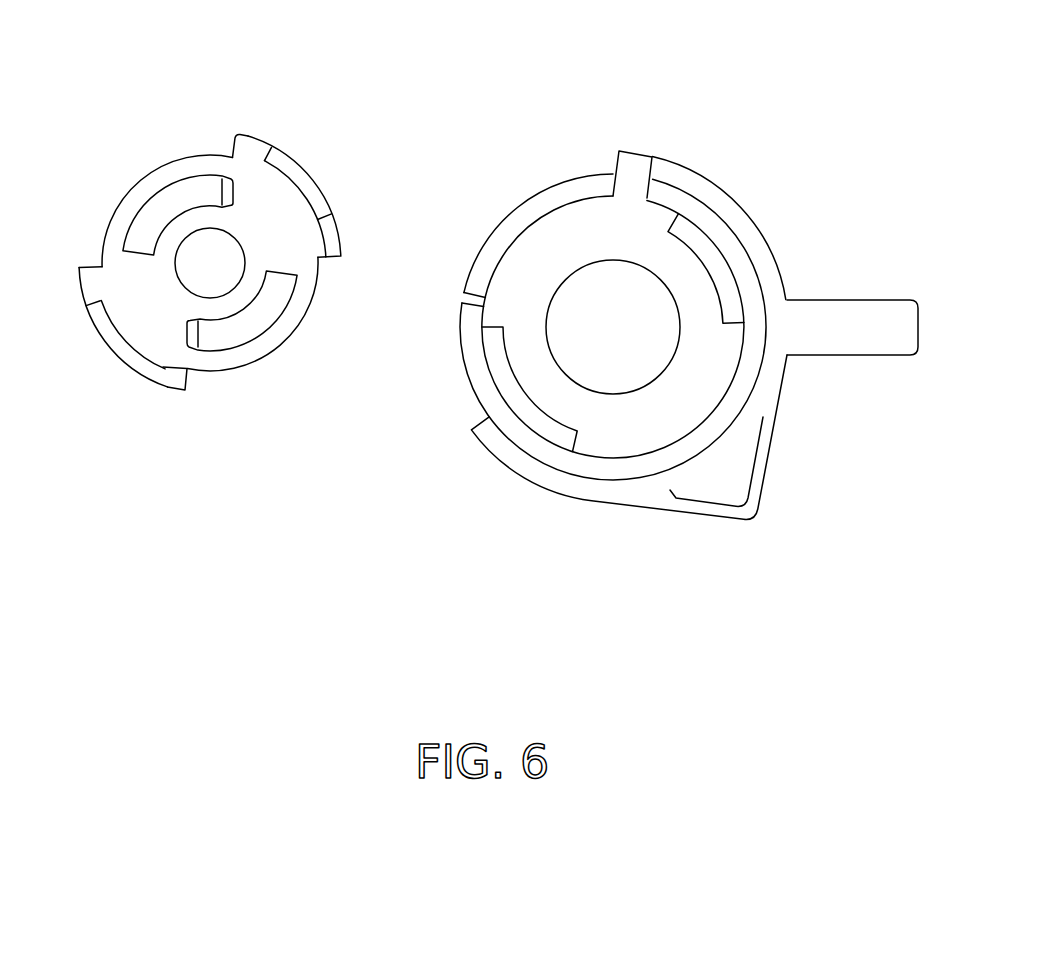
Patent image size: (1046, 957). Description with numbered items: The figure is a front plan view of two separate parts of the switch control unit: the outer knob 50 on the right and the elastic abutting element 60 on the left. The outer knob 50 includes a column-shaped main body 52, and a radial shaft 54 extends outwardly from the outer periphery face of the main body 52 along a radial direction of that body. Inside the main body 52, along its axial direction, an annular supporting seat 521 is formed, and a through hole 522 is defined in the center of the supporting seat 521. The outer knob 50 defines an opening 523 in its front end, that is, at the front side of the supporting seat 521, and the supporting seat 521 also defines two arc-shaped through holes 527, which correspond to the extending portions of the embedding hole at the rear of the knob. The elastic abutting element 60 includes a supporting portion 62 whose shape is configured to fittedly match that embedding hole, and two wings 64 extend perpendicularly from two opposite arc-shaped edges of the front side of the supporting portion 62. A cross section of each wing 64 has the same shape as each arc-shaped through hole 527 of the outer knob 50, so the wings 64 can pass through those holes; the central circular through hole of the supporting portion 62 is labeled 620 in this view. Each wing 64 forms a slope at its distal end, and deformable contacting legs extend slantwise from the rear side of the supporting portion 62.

The outer knob 50 is at (684, 281).
The main body 52 is at (763, 257).
The radial shaft 54 is at (847, 343).
The supporting seat 521 is at (698, 410).
The through hole 522 is at (600, 300).
The opening 523 is at (623, 417).
The arc-shaped through holes 527 is at (697, 232).
The elastic abutting element 60 is at (271, 97).
The supporting portion 62 is at (246, 193).
The wings 64 is at (307, 192).
The central hole 620 is at (218, 268).